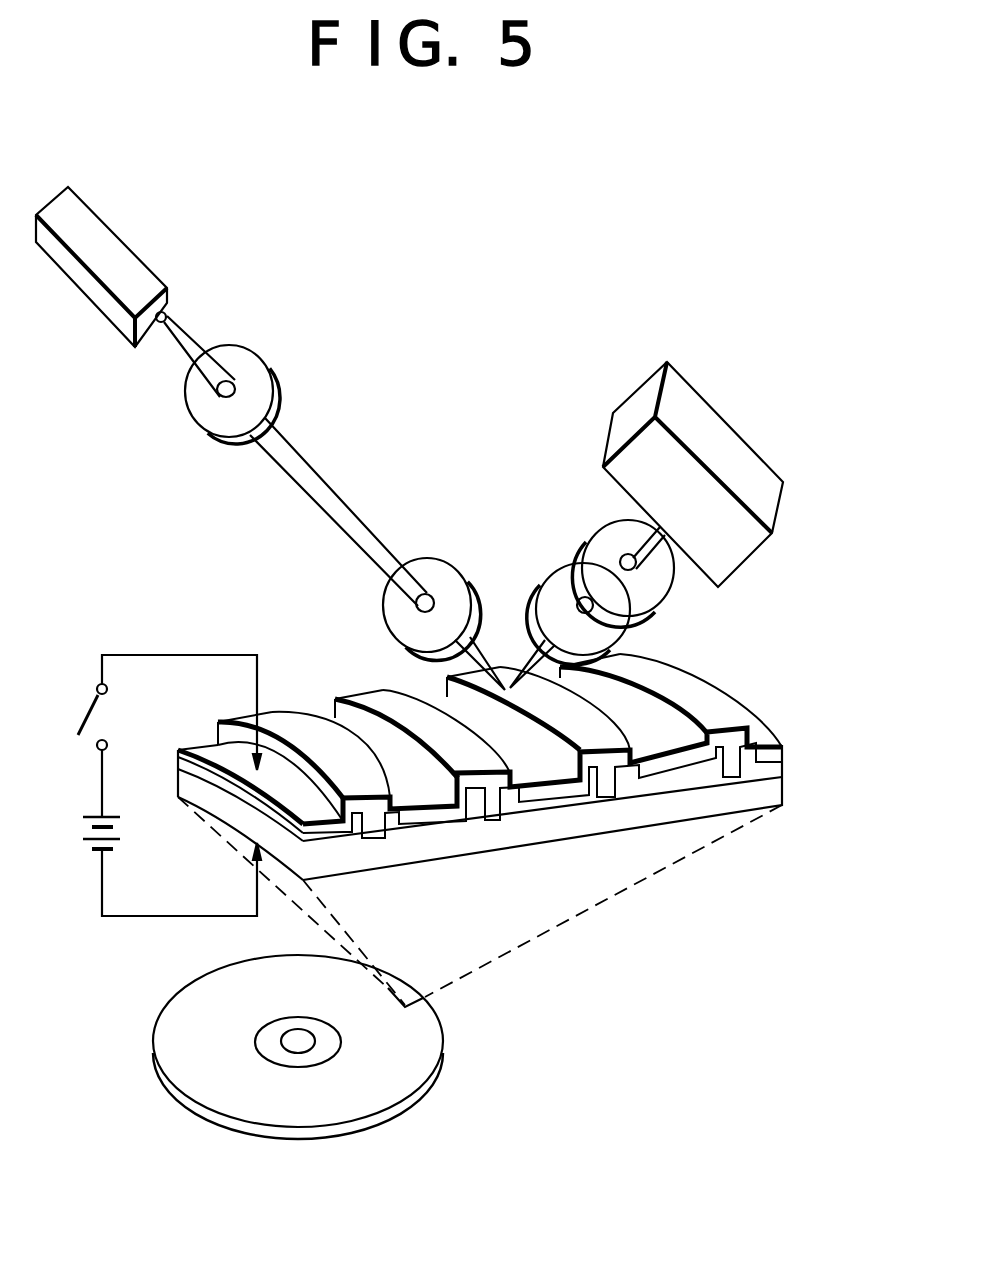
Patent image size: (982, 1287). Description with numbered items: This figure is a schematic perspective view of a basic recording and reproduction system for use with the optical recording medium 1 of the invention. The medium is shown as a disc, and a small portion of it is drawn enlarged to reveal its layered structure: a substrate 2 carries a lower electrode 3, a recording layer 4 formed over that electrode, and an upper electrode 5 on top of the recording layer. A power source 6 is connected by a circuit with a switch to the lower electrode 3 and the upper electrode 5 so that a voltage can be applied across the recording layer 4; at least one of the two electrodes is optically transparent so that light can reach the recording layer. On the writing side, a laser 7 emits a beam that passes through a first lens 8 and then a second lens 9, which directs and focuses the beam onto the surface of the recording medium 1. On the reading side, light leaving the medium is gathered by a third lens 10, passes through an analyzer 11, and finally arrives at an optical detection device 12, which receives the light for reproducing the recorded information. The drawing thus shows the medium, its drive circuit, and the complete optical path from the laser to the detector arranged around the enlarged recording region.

The optical recording medium 1 is at (422, 1062).
The substrate 2 is at (470, 842).
The lower electrode 3 is at (782, 783).
The recording layer 4 is at (500, 790).
The upper electrode 5 is at (780, 757).
The power source 6 is at (125, 833).
The laser 7 is at (93, 263).
The lens 8 is at (245, 357).
The lens 9 is at (427, 570).
The lens 10 is at (557, 580).
The analyzer 11 is at (653, 585).
The optical detection device 12 is at (727, 447).